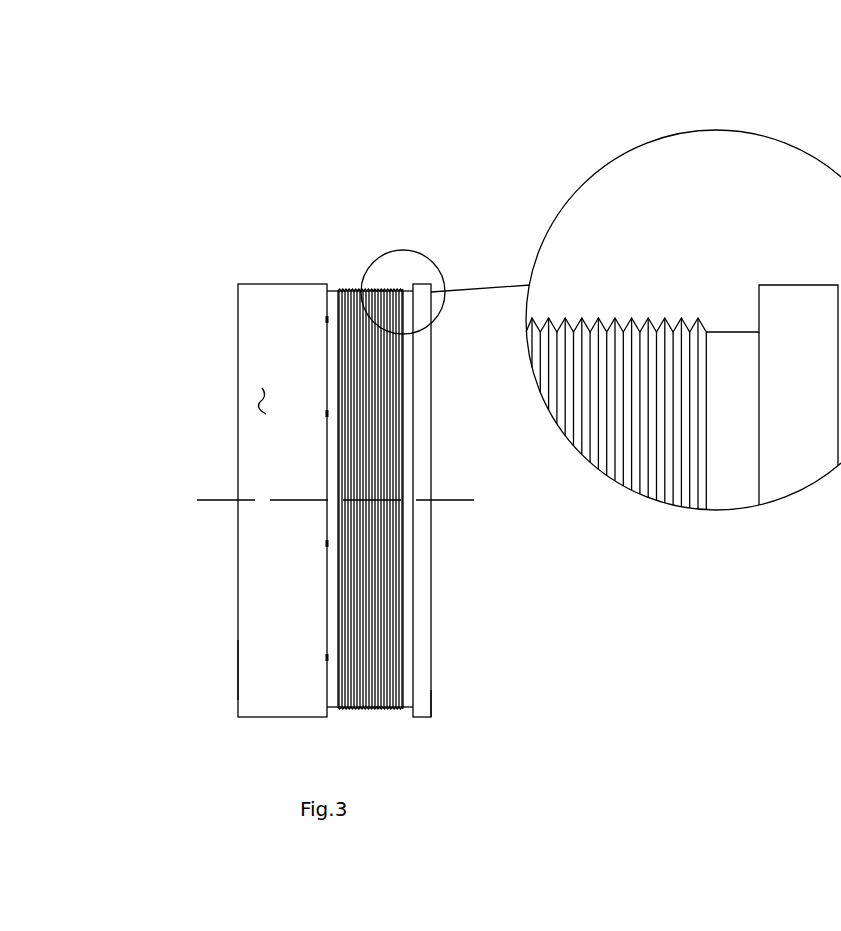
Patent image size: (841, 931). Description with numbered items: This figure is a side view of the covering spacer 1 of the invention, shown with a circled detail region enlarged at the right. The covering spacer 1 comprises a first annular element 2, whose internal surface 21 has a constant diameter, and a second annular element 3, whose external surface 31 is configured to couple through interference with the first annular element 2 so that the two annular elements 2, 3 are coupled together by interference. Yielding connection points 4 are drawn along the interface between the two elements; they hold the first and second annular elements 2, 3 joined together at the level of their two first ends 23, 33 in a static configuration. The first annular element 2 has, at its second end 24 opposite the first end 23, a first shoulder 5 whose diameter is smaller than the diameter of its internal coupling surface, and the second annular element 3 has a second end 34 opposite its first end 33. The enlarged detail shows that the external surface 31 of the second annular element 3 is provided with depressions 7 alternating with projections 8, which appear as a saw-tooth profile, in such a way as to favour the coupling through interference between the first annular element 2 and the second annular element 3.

The covering spacer 1 is at (377, 155).
The first annular element 2 is at (273, 254).
The second annular element 3 is at (393, 275).
The yielding connection points 4 is at (327, 545).
The first shoulder 5 is at (423, 563).
The depressions 7 is at (615, 318).
The projections 8 is at (623, 332).
The internal surface 21 is at (258, 405).
The first end 23 is at (325, 719).
The second end 24 is at (229, 638).
The external surface 31 is at (351, 283).
The first end 33 is at (336, 712).
The second end 34 is at (447, 704).